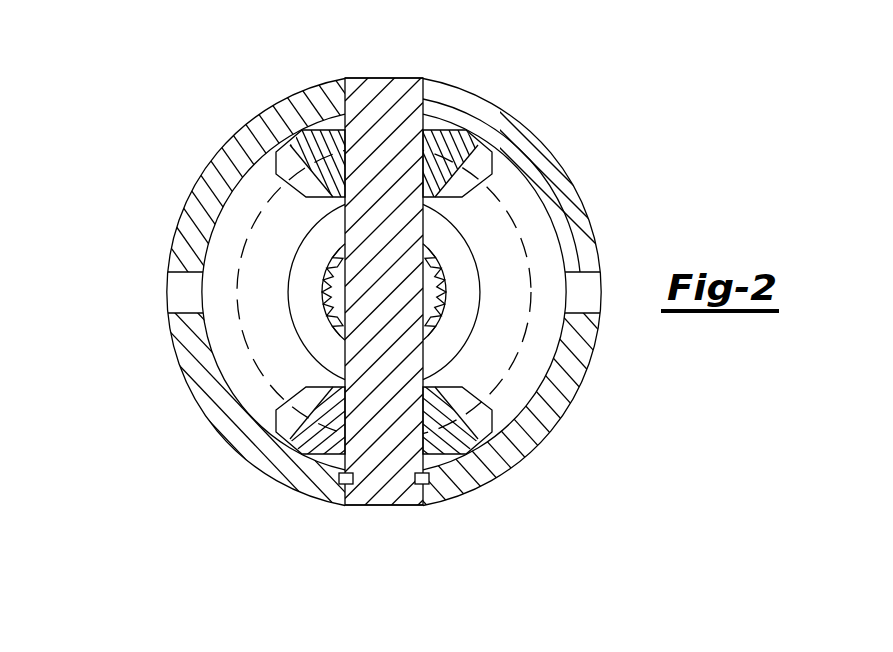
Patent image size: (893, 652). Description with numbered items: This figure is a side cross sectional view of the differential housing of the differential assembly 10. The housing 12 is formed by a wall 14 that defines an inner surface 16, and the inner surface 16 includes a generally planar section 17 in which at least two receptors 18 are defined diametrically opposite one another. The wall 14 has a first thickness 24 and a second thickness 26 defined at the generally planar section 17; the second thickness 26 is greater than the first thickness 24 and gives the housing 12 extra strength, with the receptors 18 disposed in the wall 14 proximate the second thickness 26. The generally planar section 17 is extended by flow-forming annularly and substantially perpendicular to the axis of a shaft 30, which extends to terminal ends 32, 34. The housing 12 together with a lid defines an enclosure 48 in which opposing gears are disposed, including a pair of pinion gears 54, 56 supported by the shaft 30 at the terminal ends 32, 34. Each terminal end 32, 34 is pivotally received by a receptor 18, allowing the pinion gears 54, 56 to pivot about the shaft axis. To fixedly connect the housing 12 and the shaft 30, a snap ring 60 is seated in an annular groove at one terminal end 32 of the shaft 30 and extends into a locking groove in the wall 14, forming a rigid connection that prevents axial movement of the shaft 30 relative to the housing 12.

The differential assembly 10 is at (163, 427).
The housing 12 is at (433, 326).
The wall 14 is at (174, 257).
The inner surface 16 is at (213, 348).
The generally planar section 17 is at (326, 146).
The receptors 18 is at (352, 108).
The first thickness 24 is at (232, 157).
The second thickness 26 is at (293, 113).
The shaft 30 is at (366, 228).
The terminal end 32 is at (388, 507).
The terminal end 34 is at (377, 78).
The enclosure 48 is at (207, 237).
The pinion gear 54 is at (455, 140).
The pinion gear 56 is at (453, 438).
The snap ring 60 is at (338, 479).